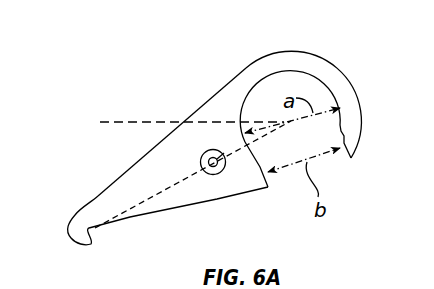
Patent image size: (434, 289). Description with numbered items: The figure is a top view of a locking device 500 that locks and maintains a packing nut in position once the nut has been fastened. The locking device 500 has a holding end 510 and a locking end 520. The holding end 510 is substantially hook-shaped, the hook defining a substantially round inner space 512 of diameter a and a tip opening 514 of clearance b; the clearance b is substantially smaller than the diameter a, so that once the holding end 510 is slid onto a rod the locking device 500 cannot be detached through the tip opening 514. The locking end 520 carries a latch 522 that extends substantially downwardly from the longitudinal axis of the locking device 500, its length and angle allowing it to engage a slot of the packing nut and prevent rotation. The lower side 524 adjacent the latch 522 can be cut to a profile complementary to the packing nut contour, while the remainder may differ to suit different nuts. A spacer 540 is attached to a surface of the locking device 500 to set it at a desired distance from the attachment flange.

The locking device 500 is at (99, 46).
The holding end 510 is at (337, 65).
The inner space 512 is at (296, 77).
The tip opening 514 is at (332, 165).
The locking end 520 is at (116, 180).
The latch 522 is at (88, 244).
The lower side 524 is at (113, 234).
The spacer 540 is at (215, 175).